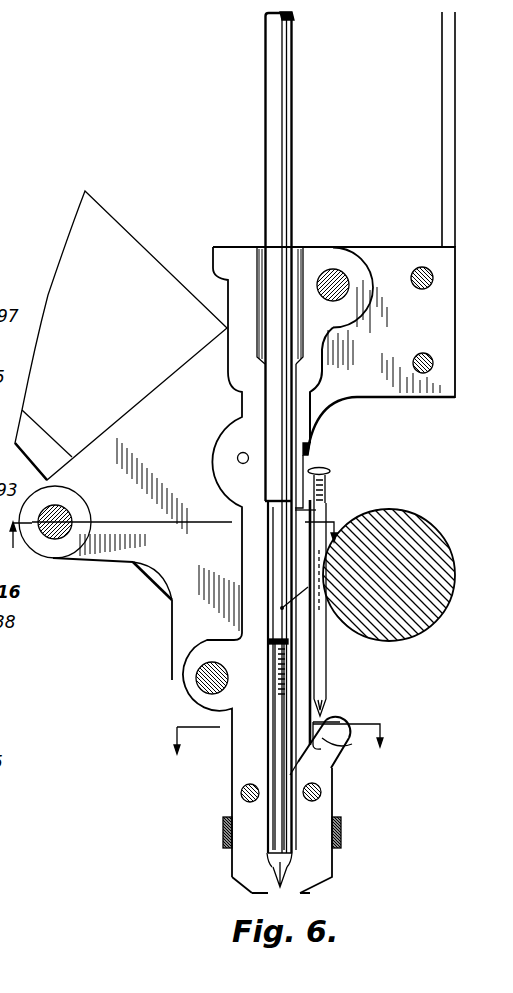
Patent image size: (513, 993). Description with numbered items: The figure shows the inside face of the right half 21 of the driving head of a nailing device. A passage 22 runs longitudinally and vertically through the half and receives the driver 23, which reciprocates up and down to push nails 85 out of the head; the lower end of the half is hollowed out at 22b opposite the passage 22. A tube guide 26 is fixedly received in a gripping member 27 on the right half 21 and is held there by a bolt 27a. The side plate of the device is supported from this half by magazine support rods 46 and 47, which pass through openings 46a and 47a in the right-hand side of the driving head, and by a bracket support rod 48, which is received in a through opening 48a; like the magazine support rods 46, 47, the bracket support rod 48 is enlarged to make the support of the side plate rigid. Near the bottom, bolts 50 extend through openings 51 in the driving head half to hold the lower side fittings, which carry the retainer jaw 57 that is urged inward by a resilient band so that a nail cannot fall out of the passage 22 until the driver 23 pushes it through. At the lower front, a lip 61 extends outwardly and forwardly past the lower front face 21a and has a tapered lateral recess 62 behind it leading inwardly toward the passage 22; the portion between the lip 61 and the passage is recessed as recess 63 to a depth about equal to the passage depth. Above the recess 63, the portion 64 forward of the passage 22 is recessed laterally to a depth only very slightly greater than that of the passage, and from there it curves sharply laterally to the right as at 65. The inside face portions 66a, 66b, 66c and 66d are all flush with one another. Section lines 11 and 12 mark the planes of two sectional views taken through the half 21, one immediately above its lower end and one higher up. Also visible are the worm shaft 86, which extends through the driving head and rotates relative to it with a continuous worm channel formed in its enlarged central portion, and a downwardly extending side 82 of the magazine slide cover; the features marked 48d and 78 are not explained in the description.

The section line 11- 11 is at (289, 754).
The section line 12- 12 is at (185, 535).
The right half 21 is at (173, 646).
The lower front face 21a is at (316, 874).
The passage 22 is at (268, 770).
The hollowed out lower end portion 22b is at (302, 852).
The driver 23 is at (285, 231).
The tube guide 26 is at (447, 181).
The gripping member 27 is at (391, 255).
The bolt 27a is at (423, 348).
The magazine support rod 46 is at (72, 521).
The opening 46a is at (53, 537).
The magazine support rod 47 is at (213, 662).
The opening 47a is at (191, 695).
The bracket support rod 48 is at (335, 268).
The through opening 48a is at (343, 300).
The pin end 48d is at (237, 465).
The bolts 50 is at (243, 803).
The openings 51 is at (241, 791).
The retainer jaw 57 is at (268, 895).
The lip 61 is at (344, 742).
The tapered lateral recess 62 is at (332, 760).
The recess 63 is at (308, 665).
The recessed portion 64 is at (293, 553).
The lateral curve 65 is at (308, 523).
The inside face portion 66a is at (330, 880).
The inside face portion 66b is at (240, 866).
The inside face portion 66c is at (312, 395).
The inside face portion 66d is at (73, 545).
The bracket 78 is at (348, 711).
The downwardly extending sides 82 is at (148, 282).
The nails 85 is at (323, 647).
The worm shaft 86 is at (413, 547).